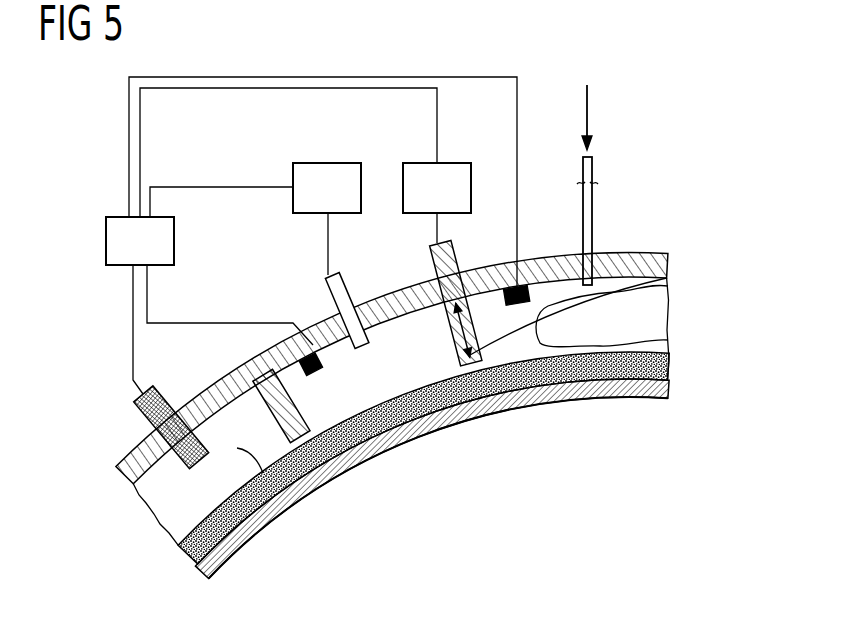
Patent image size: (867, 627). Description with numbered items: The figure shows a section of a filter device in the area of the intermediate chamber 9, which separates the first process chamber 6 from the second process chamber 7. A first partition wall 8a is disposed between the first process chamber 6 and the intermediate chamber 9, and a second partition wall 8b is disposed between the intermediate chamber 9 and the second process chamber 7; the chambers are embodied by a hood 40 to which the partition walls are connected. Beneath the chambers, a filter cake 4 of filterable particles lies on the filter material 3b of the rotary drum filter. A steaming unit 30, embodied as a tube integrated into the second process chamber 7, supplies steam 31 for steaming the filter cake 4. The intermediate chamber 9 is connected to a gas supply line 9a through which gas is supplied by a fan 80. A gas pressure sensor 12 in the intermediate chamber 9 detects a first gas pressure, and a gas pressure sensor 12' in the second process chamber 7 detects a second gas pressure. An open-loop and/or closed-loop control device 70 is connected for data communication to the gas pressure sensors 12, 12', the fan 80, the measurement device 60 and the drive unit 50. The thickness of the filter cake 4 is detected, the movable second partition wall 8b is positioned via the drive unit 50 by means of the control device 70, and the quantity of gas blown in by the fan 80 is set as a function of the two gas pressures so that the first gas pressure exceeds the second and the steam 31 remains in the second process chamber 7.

The open-loop and/or closed-loop control device 70 is at (106, 240).
The fan 80 is at (331, 163).
The drive unit 50 is at (455, 163).
The steam 31 is at (587, 110).
The steaming unit 30 is at (593, 170).
The hood 40 is at (638, 253).
The second partition wall 8b is at (460, 262).
The gas supply line 9a is at (352, 292).
The first partition wall 8a is at (265, 398).
The measurement device 60 is at (150, 423).
The gas pressure sensor 12 is at (343, 428).
The gas pressure sensor 12' is at (541, 375).
The intermediate chamber 9 is at (403, 353).
The second process chamber 7 is at (497, 338).
The filter cake 4 is at (668, 370).
The filter material 3b is at (668, 392).
The first process chamber 6 is at (273, 520).